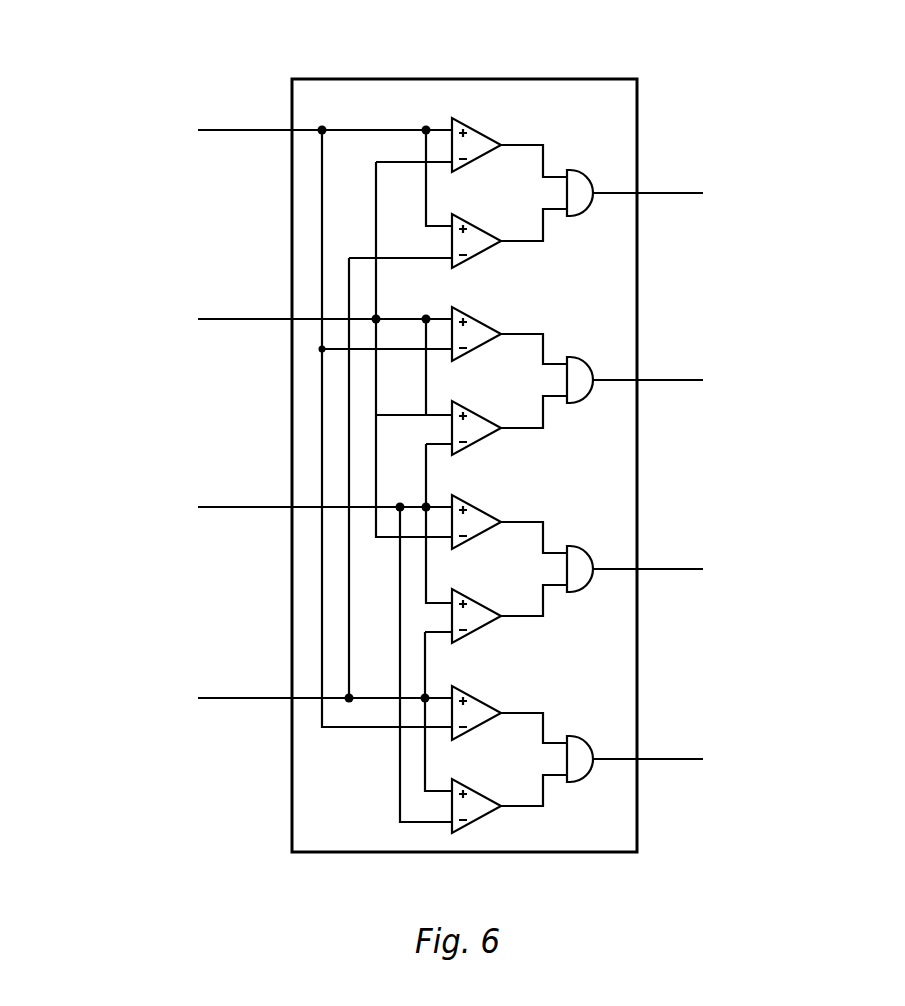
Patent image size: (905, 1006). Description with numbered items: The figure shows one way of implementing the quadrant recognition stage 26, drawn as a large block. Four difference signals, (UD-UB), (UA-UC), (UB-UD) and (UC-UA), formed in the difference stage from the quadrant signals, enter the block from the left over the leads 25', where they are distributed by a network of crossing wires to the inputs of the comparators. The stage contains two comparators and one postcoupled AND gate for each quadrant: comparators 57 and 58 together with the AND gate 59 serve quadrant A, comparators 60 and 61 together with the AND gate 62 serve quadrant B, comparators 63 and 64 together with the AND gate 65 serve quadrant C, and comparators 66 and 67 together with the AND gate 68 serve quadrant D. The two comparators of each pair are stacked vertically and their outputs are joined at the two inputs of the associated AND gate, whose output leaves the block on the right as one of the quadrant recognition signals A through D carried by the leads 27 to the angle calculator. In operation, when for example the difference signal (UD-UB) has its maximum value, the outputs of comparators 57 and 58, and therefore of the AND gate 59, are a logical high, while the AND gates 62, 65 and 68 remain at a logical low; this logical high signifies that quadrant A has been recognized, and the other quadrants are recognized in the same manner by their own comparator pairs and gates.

The quadrant recognition stage 26 is at (571, 95).
The leads 25' is at (277, 462).
The leads 27 is at (707, 167).
The comparator 57 is at (481, 136).
The comparator 58 is at (480, 241).
The AND gate 59 is at (578, 202).
The comparator 60 is at (479, 328).
The comparator 61 is at (478, 432).
The AND gate 62 is at (578, 389).
The comparator 63 is at (472, 513).
The comparator 64 is at (476, 620).
The AND gate 65 is at (577, 578).
The comparator 66 is at (471, 703).
The comparator 67 is at (476, 808).
The AND gate 68 is at (578, 767).